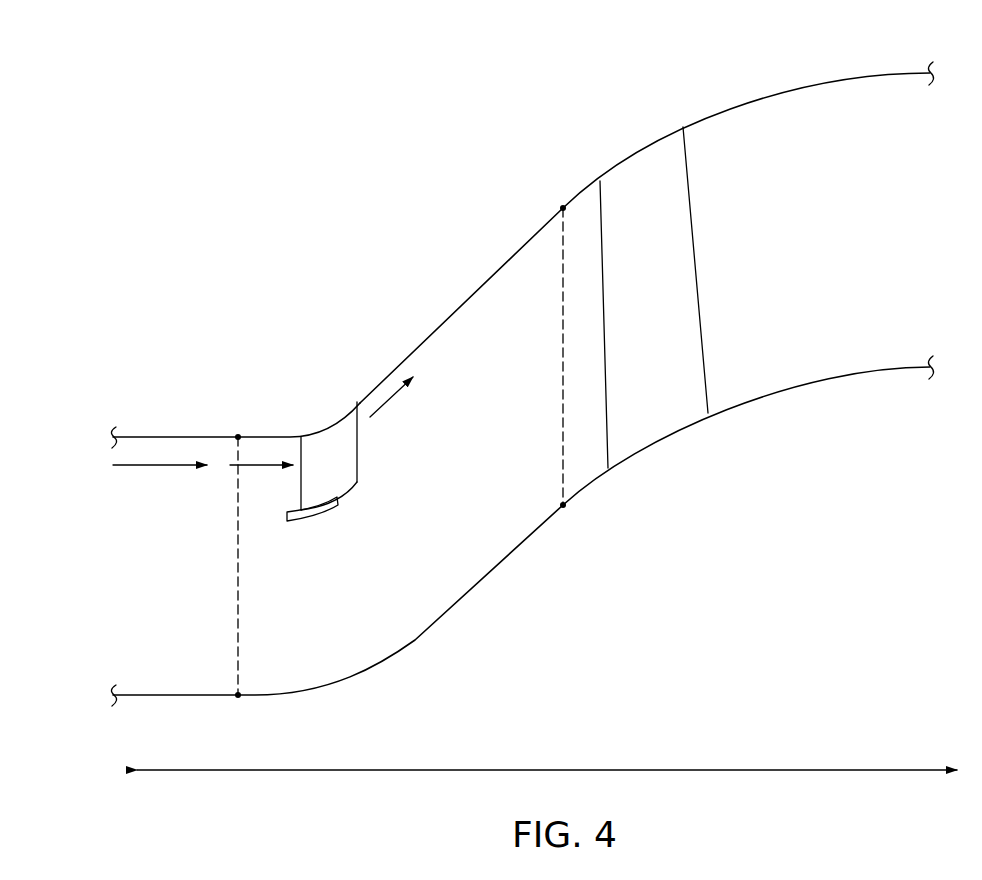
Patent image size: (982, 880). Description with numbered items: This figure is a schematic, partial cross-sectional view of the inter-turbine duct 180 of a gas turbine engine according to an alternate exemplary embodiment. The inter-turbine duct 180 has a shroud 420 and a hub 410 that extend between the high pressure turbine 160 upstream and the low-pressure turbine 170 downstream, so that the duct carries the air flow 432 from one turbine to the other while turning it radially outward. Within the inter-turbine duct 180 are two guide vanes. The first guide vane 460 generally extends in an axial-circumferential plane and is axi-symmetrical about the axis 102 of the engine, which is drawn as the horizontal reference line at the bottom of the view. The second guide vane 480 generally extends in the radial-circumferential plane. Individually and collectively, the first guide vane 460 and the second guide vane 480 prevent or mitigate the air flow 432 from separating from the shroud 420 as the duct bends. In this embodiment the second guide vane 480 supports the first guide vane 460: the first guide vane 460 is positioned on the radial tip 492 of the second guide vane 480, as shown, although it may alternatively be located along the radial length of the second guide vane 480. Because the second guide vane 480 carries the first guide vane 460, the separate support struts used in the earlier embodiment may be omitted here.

The axis 102 is at (785, 768).
The high pressure turbine 160 is at (138, 430).
The low-pressure turbine 170 is at (710, 108).
The inter-turbine duct 180 is at (373, 375).
The hub 410 is at (272, 697).
The shroud 420 is at (415, 348).
The air flow 432 is at (152, 467).
The first guide vane 460 is at (307, 519).
The second guide vane 480 is at (352, 457).
The radial tip 492 is at (347, 490).